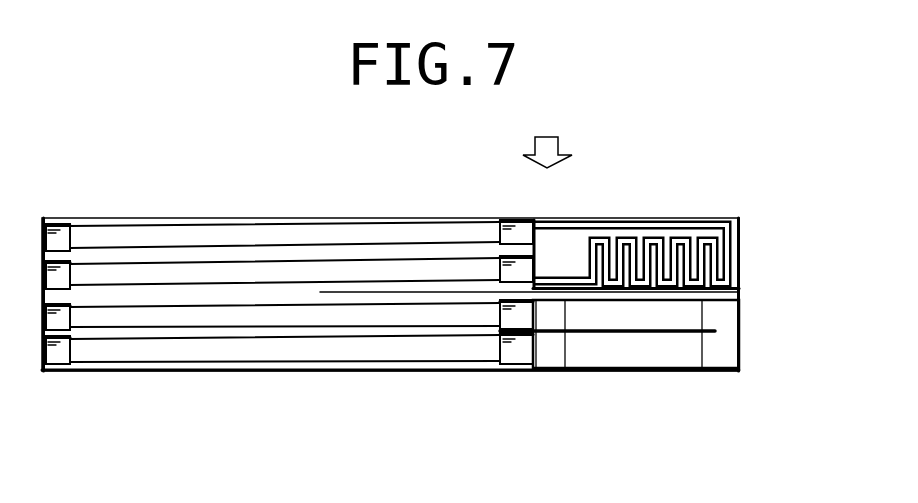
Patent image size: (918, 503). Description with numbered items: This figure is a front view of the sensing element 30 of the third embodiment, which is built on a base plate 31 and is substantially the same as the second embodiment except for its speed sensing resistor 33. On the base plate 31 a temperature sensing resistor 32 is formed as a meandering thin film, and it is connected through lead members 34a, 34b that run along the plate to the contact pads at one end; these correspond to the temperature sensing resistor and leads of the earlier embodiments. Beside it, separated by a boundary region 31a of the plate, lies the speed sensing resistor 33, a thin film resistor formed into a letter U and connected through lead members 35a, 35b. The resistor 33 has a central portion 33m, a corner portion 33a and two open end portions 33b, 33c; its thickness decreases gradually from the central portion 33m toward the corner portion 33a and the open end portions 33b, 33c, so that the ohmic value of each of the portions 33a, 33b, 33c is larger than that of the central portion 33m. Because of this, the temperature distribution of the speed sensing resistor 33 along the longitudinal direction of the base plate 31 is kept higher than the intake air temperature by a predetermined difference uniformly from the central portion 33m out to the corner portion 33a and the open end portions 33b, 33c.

The sensing element 30 is at (455, 211).
The base plate 31 is at (367, 223).
The dividing line of substrate 31a is at (740, 292).
The temperature sensing resistor 32 is at (722, 260).
The speed sensing resistor 33 is at (688, 377).
The corner portion 33a is at (725, 352).
The open end portion 33b is at (552, 350).
The open end portion 33c is at (543, 310).
The central portion 33m is at (637, 350).
The lead member 34a is at (147, 270).
The lead member 34b is at (212, 235).
The lead member 35a is at (155, 350).
The lead member 35b is at (265, 317).